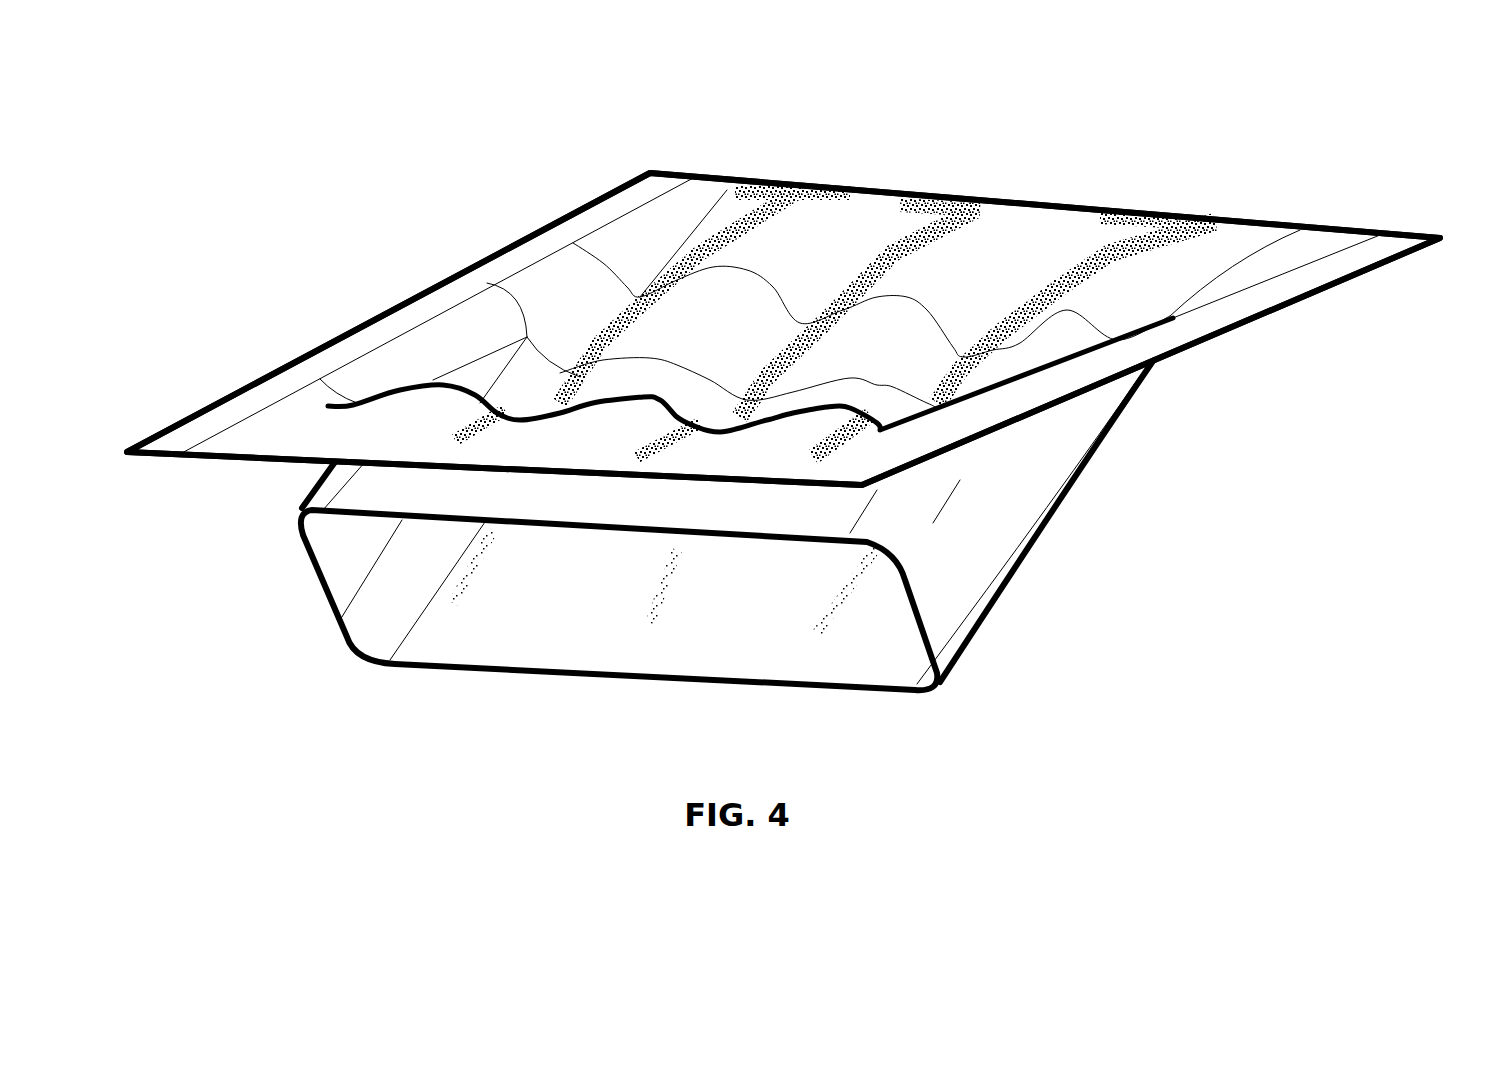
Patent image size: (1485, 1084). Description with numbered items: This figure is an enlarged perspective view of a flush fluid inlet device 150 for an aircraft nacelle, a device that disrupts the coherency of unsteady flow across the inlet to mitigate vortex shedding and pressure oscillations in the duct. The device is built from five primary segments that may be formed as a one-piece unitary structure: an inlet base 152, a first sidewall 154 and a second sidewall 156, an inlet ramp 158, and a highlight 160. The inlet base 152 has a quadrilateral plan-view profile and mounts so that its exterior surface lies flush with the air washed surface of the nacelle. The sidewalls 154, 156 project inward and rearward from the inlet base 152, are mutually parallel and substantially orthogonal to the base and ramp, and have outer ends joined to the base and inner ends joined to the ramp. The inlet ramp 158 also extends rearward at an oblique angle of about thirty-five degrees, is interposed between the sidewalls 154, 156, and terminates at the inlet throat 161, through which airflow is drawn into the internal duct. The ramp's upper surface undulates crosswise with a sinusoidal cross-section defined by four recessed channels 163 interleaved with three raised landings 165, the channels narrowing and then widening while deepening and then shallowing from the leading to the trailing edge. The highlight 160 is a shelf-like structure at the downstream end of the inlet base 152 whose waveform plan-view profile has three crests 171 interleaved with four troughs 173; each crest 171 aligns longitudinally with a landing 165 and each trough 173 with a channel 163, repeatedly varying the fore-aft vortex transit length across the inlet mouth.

The fluid inlet device 150 is at (280, 178).
The inlet base 152 is at (507, 278).
The first sidewall 154 is at (943, 593).
The second sidewall 156 is at (352, 565).
The inlet ramp 158 is at (643, 297).
The highlight 160 is at (407, 405).
The inlet throat 161 is at (337, 518).
The recessed channels 163 is at (817, 223).
The raised landings 165 is at (697, 247).
The crests 171 is at (453, 383).
The troughs 173 is at (357, 403).